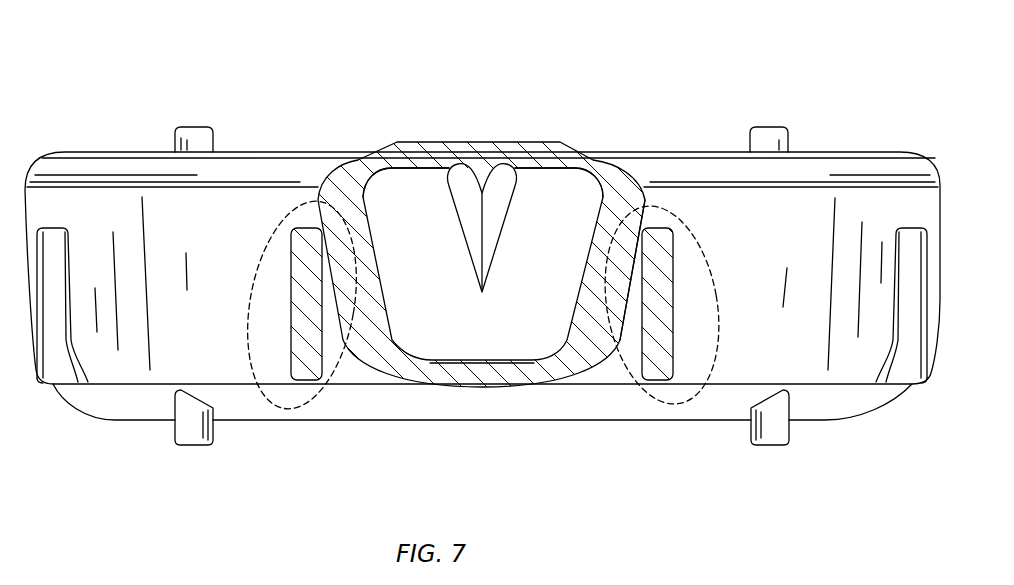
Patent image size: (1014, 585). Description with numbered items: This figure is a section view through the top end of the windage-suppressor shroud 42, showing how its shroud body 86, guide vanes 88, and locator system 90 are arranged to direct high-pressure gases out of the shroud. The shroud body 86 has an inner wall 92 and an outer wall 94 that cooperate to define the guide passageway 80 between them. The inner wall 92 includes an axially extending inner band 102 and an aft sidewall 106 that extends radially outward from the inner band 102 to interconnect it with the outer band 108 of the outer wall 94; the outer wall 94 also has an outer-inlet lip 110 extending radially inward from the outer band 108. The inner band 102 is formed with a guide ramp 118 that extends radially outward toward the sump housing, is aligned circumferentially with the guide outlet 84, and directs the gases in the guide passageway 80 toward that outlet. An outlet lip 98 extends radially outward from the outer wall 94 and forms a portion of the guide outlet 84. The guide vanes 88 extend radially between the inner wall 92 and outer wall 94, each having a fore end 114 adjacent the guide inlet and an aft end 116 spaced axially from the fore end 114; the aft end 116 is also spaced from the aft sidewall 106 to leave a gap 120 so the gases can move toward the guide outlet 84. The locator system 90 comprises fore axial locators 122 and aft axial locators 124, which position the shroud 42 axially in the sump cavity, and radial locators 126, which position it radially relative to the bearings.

The windage-suppressor shroud 42 is at (693, 133).
The guide passageway 80 is at (529, 323).
The guide outlet 84 is at (412, 338).
The shroud body 86 is at (112, 366).
The guide vanes 88 is at (263, 293).
The locator system 90 is at (67, 208).
The inner wall 92 is at (555, 208).
The outer wall 94 is at (852, 211).
The outlet lip 98 is at (625, 337).
The inner band 102 is at (450, 337).
The aft sidewall 106 is at (245, 150).
The outer band 108 is at (152, 232).
The outer-inlet lip 110 is at (228, 405).
The fore end 114 is at (291, 407).
The aft end 116 is at (345, 195).
The guide ramp 118 is at (468, 198).
The gap 120 is at (368, 197).
The fore axial locators 122 is at (793, 432).
The aft axial locators 124 is at (793, 140).
The radial locators 126 is at (901, 368).